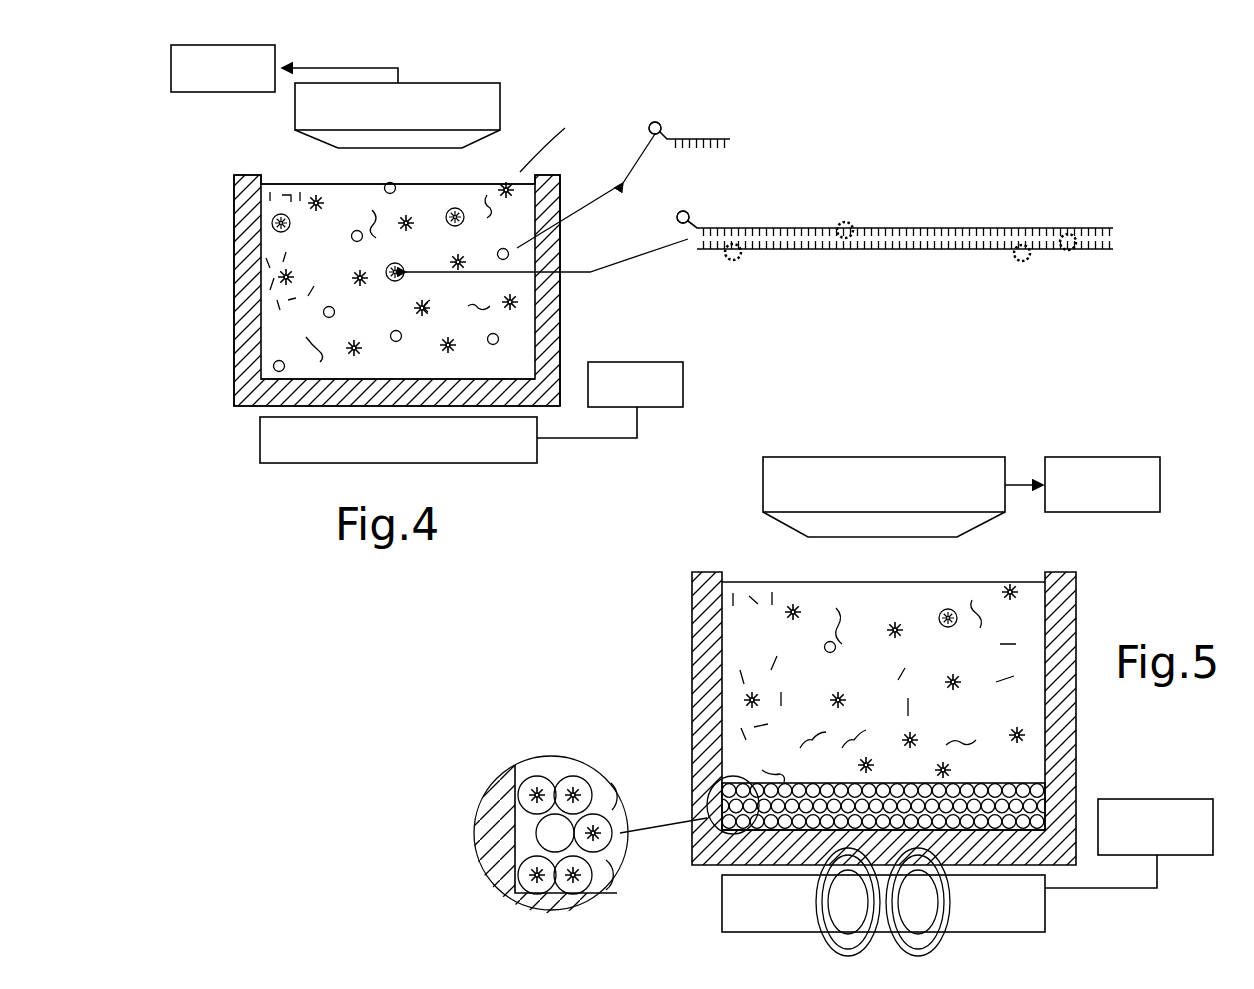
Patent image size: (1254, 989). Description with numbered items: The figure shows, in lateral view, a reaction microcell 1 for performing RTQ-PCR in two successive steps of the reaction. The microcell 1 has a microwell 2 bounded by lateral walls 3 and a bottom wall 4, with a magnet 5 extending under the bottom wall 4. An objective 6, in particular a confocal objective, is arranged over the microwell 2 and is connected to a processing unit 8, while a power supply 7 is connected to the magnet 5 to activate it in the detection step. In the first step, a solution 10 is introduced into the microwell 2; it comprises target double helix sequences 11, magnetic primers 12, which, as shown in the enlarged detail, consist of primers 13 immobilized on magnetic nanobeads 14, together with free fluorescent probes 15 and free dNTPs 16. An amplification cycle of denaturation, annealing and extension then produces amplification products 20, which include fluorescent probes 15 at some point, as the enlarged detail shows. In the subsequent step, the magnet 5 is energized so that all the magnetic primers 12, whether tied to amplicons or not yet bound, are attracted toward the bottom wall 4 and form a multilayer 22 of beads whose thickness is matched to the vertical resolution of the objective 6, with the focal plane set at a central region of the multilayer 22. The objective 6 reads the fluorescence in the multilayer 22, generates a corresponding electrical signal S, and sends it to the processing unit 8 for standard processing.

In FIG. 4, the reaction microcell 1 is at (213, 163).
In FIG. 4, the microwell 2 is at (262, 270).
In FIG. 4, the lateral walls 3 is at (241, 301).
In FIG. 5, the lateral walls 3 is at (692, 668).
In FIG. 4, the bottom wall 4 is at (273, 393).
In FIG. 5, the bottom wall 4 is at (733, 848).
In FIG. 4, the magnet 5 is at (358, 452).
In FIG. 5, the magnet 5 is at (1035, 913).
In FIG. 4, the objective 6 is at (454, 93).
In FIG. 5, the objective 6 is at (763, 483).
In FIG. 4, the power supply 7 is at (651, 366).
In FIG. 5, the power supply 7 is at (1121, 800).
In FIG. 4, the processing unit 8 is at (255, 53).
In FIG. 5, the processing unit 8 is at (1105, 505).
In FIG. 4, the solution 10 is at (550, 139).
In FIG. 4, the target double helix sequences 11 is at (488, 205).
In FIG. 5, the target double helix sequences 11 is at (973, 600).
In FIG. 4, the magnetic primers 12 is at (512, 250).
In FIG. 5, the magnetic primers 12 is at (555, 826).
In FIG. 4, the primers 13 is at (728, 144).
In FIG. 4, the magnetic nanobeads 14 is at (655, 122).
In FIG. 4, the fluorescent probes 15 is at (312, 199).
In FIG. 5, the fluorescent probes 15 is at (790, 604).
In FIG. 4, the free dNTPs 16 is at (300, 211).
In FIG. 4, the amplification products 20 is at (448, 220).
In FIG. 5, the amplification products 20 is at (538, 866).
In FIG. 5, the multilayer 22 is at (759, 777).